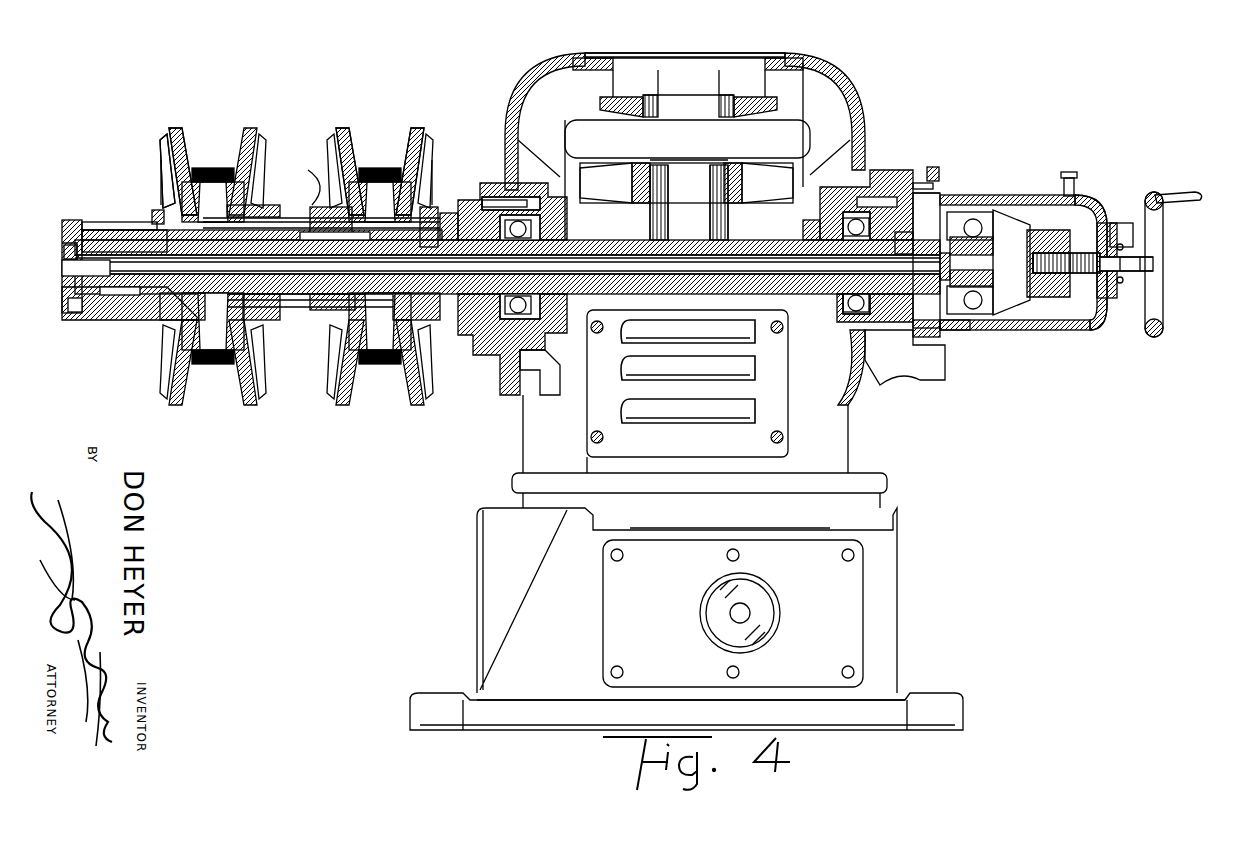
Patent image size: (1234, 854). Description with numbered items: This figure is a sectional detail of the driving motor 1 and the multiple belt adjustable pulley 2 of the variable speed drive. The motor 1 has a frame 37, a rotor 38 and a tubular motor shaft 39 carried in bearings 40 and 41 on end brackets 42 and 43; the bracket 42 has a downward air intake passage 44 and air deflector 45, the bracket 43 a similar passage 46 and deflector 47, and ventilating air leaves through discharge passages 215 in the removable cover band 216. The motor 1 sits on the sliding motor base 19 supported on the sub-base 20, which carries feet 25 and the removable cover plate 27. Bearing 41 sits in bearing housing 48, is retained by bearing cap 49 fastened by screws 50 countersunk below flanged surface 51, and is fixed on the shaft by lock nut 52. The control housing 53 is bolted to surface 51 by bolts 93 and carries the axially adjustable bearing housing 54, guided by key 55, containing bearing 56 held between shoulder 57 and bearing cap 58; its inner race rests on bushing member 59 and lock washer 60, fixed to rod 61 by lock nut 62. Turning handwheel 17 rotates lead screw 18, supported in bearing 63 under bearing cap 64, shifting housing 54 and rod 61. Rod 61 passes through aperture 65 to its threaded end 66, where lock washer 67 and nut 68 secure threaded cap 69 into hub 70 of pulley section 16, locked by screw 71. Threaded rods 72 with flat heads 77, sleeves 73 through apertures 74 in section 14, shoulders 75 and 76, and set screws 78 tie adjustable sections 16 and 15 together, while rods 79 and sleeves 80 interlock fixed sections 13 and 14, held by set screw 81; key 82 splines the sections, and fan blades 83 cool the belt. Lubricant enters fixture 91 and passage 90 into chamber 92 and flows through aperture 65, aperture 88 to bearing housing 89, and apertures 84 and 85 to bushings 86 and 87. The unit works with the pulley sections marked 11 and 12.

The driving motor 1 is at (680, 52).
The adjustable pulley 2 is at (292, 395).
The pulley 11 is at (386, 138).
The pulley 12 is at (216, 138).
The axially fixed pulley section 13 is at (414, 405).
The axially fixed pulley section 14 is at (248, 405).
The axially adjustable pulley section 15 is at (346, 405).
The axially adjustable pulley section 16 is at (177, 405).
The handwheel 17 is at (1163, 320).
The lead screw 18 is at (1080, 275).
The sliding motor base 19 is at (520, 482).
The sub-base 20 is at (477, 580).
The feet 25 is at (410, 712).
The removable cover plate 27 is at (603, 615).
The frame 37 is at (580, 55).
The rotor 38 is at (648, 214).
The tubular motor shaft 39 is at (650, 246).
The bearing 40 is at (500, 186).
The bearing 41 is at (866, 192).
The end bracket 42 is at (530, 80).
The end bracket 43 is at (858, 88).
The air intake passage 44 is at (500, 360).
The air deflector 45 is at (548, 372).
The air intake passage 46 is at (878, 350).
The air deflector 47 is at (840, 375).
The bearing housing 48 is at (843, 225).
The bearing cap 49 is at (803, 229).
The screws 50 is at (885, 195).
The flanged surface 51 is at (938, 337).
The lock nut 52 is at (880, 292).
The control housing 53 is at (1100, 327).
The axially adjustable bearing housing 54 is at (1045, 300).
The key 55 is at (1000, 195).
The bearing 56 is at (968, 212).
The shoulder 57 is at (992, 330).
The bearing cap 58 is at (948, 330).
The bushing member 59 is at (928, 260).
The lock washer 60 is at (993, 280).
The rod 61 is at (942, 278).
The lock nut 62 is at (993, 245).
The bearing 63 is at (1097, 240).
The bearing cap 64 is at (1122, 223).
The aperture 65 is at (904, 243).
The threaded end 66 is at (62, 270).
The lock washer 67 is at (63, 246).
The nut 68 is at (64, 254).
The threaded cap 69 is at (72, 220).
The hub 70 is at (108, 320).
The screw 71 is at (68, 310).
The threaded rods 72 is at (322, 208).
The sleeves 73 is at (297, 217).
The apertures 74 is at (258, 206).
The shoulder 75 is at (213, 195).
The shoulder 76 is at (305, 181).
The flat head 77 is at (154, 216).
The set screw 78 is at (163, 185).
The threaded rods 79 is at (380, 328).
The sleeves 80 is at (300, 320).
The set screw 81 is at (433, 213).
The key 82 is at (213, 328).
The fan blades 83 is at (169, 142).
The lubricating aperture 84 is at (145, 226).
The lubricating aperture 85 is at (380, 195).
The bearing bushing 86 is at (128, 296).
The bearing bushing 87 is at (315, 235).
The aperture 88 is at (462, 225).
The bearing housing 89 is at (482, 202).
The lubricant conducting passage 90 is at (1092, 196).
The lubricating fixture 91 is at (1068, 172).
The lubricant retaining chamber 92 is at (1045, 215).
The bolts 93 is at (955, 162).
The air discharge passages 215 is at (635, 395).
The removable cover band 216 is at (590, 440).